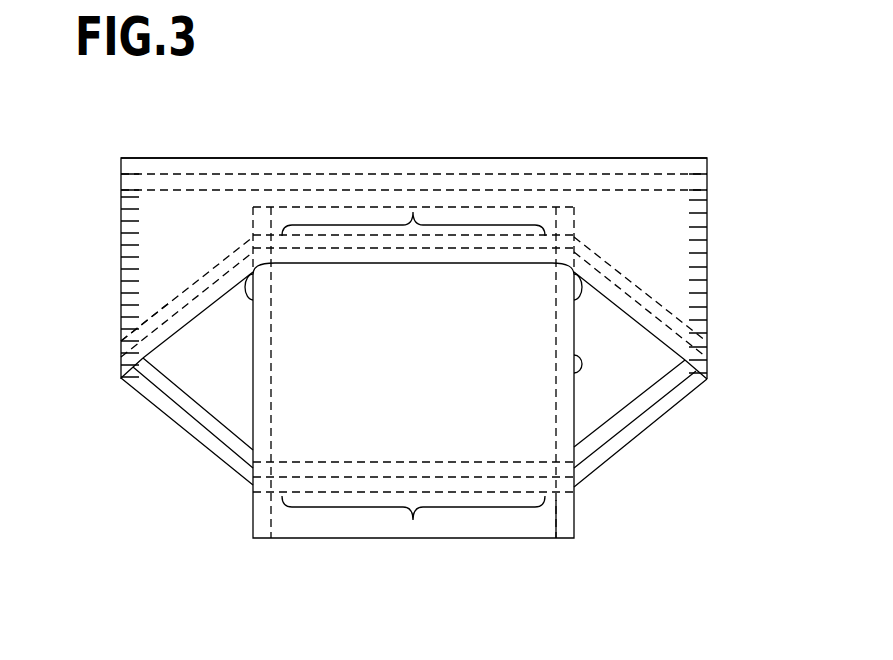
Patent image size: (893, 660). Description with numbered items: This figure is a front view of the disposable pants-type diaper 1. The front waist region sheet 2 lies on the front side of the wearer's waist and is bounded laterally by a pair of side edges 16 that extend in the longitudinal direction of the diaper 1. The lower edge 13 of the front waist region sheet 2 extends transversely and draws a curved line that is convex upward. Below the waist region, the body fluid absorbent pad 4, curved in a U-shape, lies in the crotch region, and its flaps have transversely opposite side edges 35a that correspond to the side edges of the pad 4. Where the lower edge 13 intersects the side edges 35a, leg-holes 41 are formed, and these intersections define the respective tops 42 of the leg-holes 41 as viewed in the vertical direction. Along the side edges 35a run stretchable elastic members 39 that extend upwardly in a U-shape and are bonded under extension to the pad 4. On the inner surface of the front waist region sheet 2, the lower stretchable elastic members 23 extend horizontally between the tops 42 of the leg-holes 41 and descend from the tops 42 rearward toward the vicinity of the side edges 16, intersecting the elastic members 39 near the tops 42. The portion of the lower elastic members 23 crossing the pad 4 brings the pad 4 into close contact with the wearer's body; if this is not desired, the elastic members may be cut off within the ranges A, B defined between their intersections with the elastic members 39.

The disposable pants-type diaper 1 is at (590, 103).
The front waist region sheet 2 is at (677, 219).
The body fluid absorbent pad 4 is at (300, 540).
The lower edge 13 is at (215, 306).
The side edges 16 is at (707, 285).
The lower stretchable elastic members 23 is at (165, 302).
The side edges of the flaps 35a is at (575, 372).
The stretchable elastic members 39 is at (560, 513).
The leg-holes 41 is at (180, 377).
The tops of the leg-holes 42 is at (253, 295).
The range A is at (412, 207).
The range B is at (413, 525).